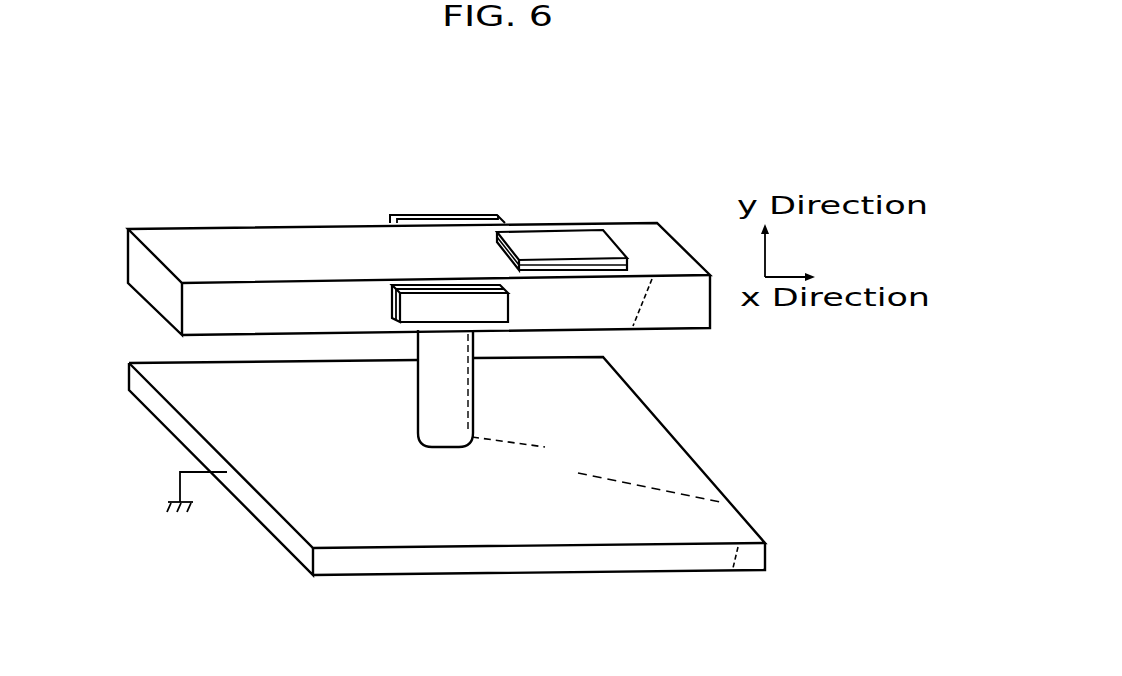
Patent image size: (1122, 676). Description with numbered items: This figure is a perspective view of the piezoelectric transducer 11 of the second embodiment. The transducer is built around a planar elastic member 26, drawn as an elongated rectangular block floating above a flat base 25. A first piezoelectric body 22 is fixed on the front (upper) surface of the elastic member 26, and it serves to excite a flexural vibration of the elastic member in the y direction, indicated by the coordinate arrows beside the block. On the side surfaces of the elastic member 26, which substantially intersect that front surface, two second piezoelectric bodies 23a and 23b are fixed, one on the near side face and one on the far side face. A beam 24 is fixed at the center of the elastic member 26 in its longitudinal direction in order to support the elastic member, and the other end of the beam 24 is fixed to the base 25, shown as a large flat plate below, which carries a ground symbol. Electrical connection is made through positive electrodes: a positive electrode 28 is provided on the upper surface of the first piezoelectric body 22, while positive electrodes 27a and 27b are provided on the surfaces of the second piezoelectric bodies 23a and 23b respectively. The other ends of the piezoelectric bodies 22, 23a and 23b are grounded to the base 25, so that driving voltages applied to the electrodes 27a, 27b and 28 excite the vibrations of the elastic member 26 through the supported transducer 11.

The piezoelectric transducer 11 is at (272, 158).
The first piezoelectric body 22 is at (630, 258).
The second piezoelectric body 23a is at (403, 280).
The second piezoelectric body 23b is at (503, 223).
The beam 24 is at (462, 402).
The base 25 is at (673, 470).
The planar elastic member 26 is at (242, 240).
The positive electrode 27a is at (437, 302).
The positive electrode 27b is at (492, 214).
The positive electrode 28 is at (608, 248).